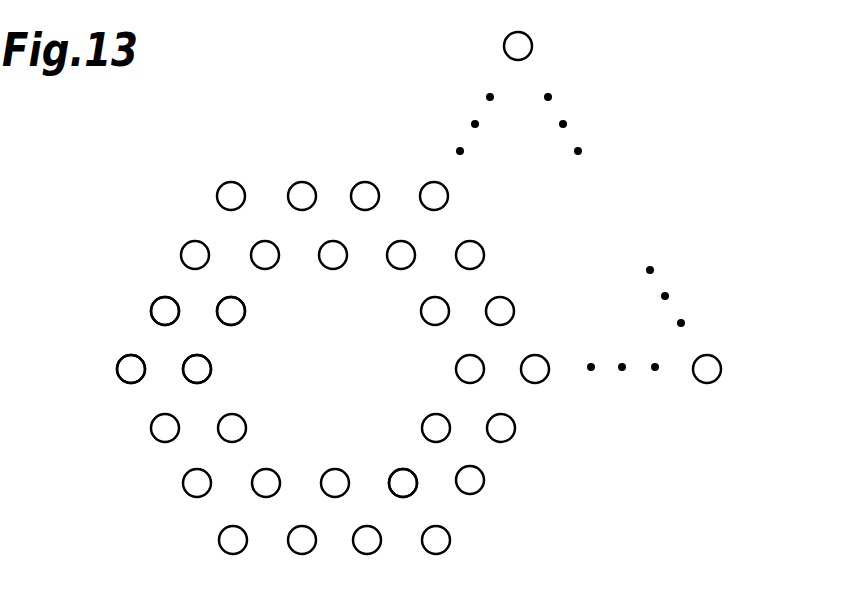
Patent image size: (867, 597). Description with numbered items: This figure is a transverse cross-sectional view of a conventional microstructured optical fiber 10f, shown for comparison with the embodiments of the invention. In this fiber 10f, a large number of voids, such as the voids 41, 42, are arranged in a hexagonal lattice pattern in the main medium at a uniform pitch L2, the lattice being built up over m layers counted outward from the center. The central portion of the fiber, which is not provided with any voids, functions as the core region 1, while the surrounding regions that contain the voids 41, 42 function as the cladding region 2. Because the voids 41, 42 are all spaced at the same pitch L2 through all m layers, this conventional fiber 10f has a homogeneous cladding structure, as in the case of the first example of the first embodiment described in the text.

The conventional microstructured optical fiber 10f is at (652, 148).
The core region 1 is at (262, 358).
The cladding region 2 is at (470, 446).
The void 41 is at (417, 483).
The void 42 is at (484, 481).
The pitch L2 is at (297, 174).
The number of layers m is at (463, 393).